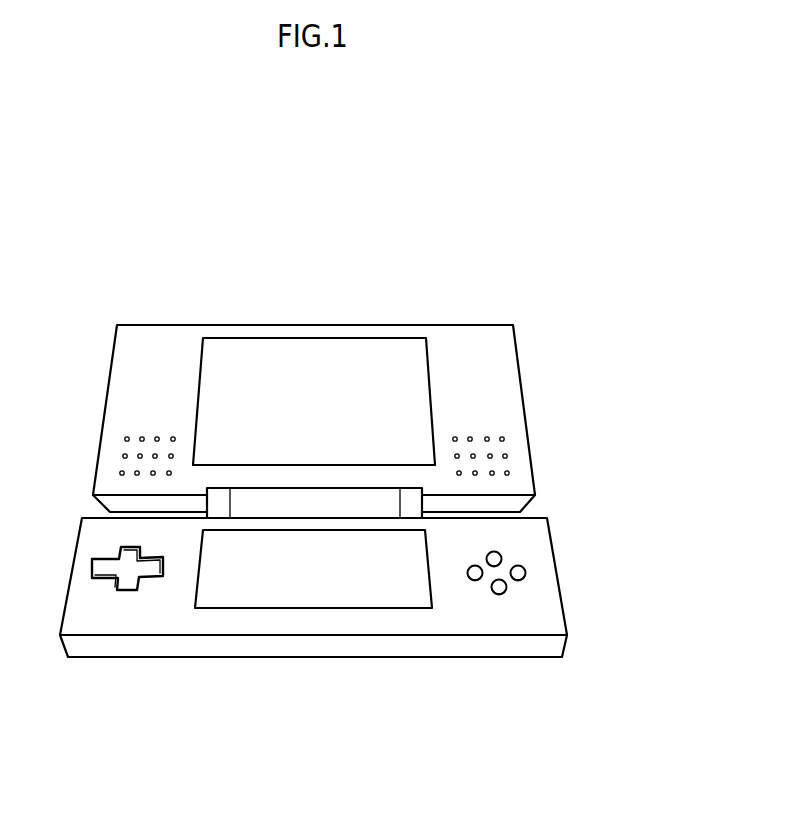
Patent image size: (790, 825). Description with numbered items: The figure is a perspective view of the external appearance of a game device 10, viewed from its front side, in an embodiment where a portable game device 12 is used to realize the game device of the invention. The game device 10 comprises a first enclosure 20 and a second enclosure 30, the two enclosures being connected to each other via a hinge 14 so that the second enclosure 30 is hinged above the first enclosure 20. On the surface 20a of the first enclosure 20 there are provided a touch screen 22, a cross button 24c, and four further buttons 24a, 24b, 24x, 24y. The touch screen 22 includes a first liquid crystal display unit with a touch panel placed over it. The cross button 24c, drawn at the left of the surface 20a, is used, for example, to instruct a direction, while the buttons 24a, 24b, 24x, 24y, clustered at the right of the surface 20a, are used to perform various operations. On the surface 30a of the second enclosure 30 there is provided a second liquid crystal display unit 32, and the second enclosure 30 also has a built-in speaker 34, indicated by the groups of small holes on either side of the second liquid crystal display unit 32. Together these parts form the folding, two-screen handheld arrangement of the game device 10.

The game device 10 is at (372, 237).
The portable game device 12 is at (465, 282).
The hinge 14 is at (277, 486).
The first enclosure 20 is at (560, 586).
The surface of the first enclosure 20a is at (127, 613).
The touch screen 22 is at (210, 610).
The button 24a is at (526, 571).
The button 24b is at (500, 595).
The cross button 24c is at (130, 552).
The button 24x is at (499, 554).
The button 24y is at (476, 581).
The second enclosure 30 is at (523, 390).
The surface of the second enclosure 30a is at (152, 345).
The second liquid crystal display unit 32 is at (430, 372).
The speaker 34 is at (118, 453).